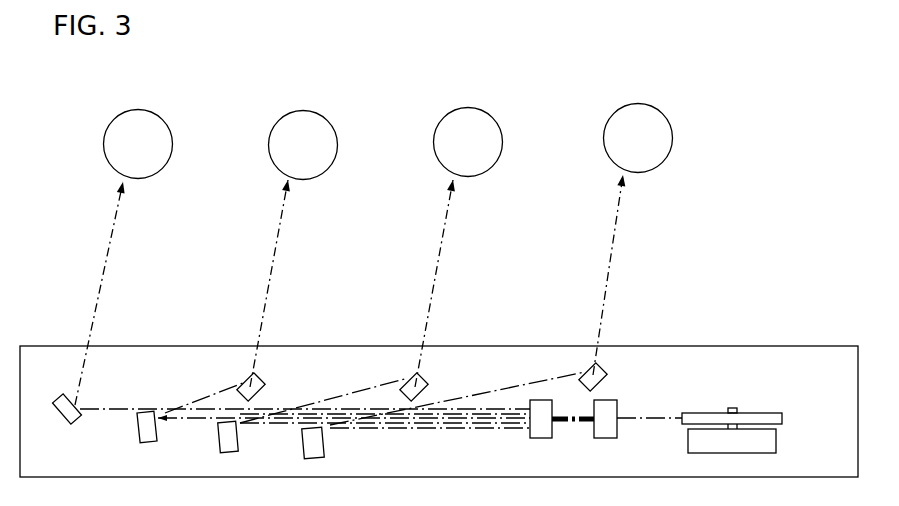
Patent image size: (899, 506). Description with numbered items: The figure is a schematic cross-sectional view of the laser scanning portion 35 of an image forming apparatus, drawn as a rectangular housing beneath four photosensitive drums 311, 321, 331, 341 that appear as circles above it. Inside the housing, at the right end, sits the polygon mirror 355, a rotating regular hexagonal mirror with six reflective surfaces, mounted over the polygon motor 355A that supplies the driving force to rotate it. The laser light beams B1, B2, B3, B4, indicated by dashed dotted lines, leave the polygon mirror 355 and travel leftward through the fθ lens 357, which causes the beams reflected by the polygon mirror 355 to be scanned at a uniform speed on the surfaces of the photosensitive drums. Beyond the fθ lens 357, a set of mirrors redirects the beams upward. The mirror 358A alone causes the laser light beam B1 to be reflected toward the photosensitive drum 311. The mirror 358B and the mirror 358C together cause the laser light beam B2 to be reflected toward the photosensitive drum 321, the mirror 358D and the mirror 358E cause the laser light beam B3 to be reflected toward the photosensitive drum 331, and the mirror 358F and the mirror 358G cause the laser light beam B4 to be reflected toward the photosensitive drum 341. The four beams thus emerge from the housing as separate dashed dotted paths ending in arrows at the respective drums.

The laser scanning portion 35 is at (778, 346).
The photosensitive drum 311 is at (138, 110).
The photosensitive drum 321 is at (303, 110).
The photosensitive drum 331 is at (468, 108).
The photosensitive drum 341 is at (638, 103).
The laser light beam B1 is at (108, 250).
The laser light beam B2 is at (272, 250).
The laser light beam B3 is at (437, 250).
The laser light beam B4 is at (610, 248).
The polygon mirror 355 is at (762, 412).
The polygon motor 355A is at (776, 440).
The fθ lens 357 is at (541, 438).
The mirror 358A is at (60, 397).
The mirror 358B is at (137, 432).
The mirror 358C is at (262, 382).
The mirror 358D is at (218, 445).
The mirror 358E is at (425, 380).
The mirror 358F is at (304, 455).
The mirror 358G is at (607, 371).